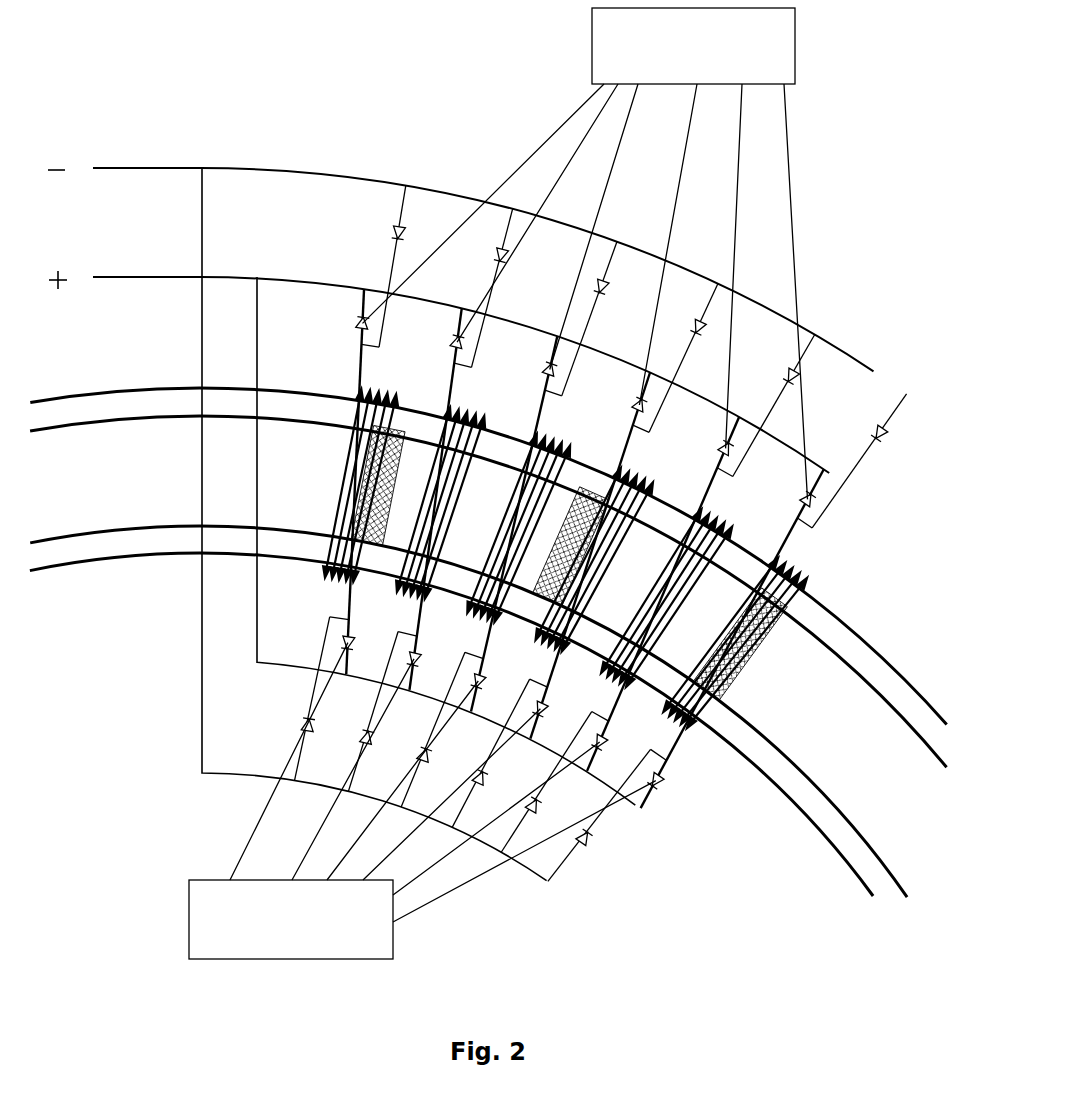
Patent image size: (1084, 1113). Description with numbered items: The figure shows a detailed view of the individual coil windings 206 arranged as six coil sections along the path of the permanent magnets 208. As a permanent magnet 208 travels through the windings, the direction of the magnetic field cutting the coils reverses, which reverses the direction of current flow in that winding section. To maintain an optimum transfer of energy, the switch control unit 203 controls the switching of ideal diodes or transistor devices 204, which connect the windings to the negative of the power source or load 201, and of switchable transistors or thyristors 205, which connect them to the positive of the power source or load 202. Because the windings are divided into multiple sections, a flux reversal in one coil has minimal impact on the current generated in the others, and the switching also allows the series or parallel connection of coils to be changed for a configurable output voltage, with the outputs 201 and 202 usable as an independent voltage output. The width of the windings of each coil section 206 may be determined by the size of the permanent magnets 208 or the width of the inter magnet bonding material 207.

The negative of the power source or load 201 is at (162, 162).
The positive of the power source or load 202 is at (128, 279).
The switch control unit 203 is at (498, 483).
The ideal diodes or transistor devices 204 is at (803, 367).
The switchable transistors or thyristors 205 is at (822, 497).
The coil windings 206 is at (800, 565).
The inter magnet bonding material 207 is at (745, 637).
The permanent magnet 208 is at (303, 475).